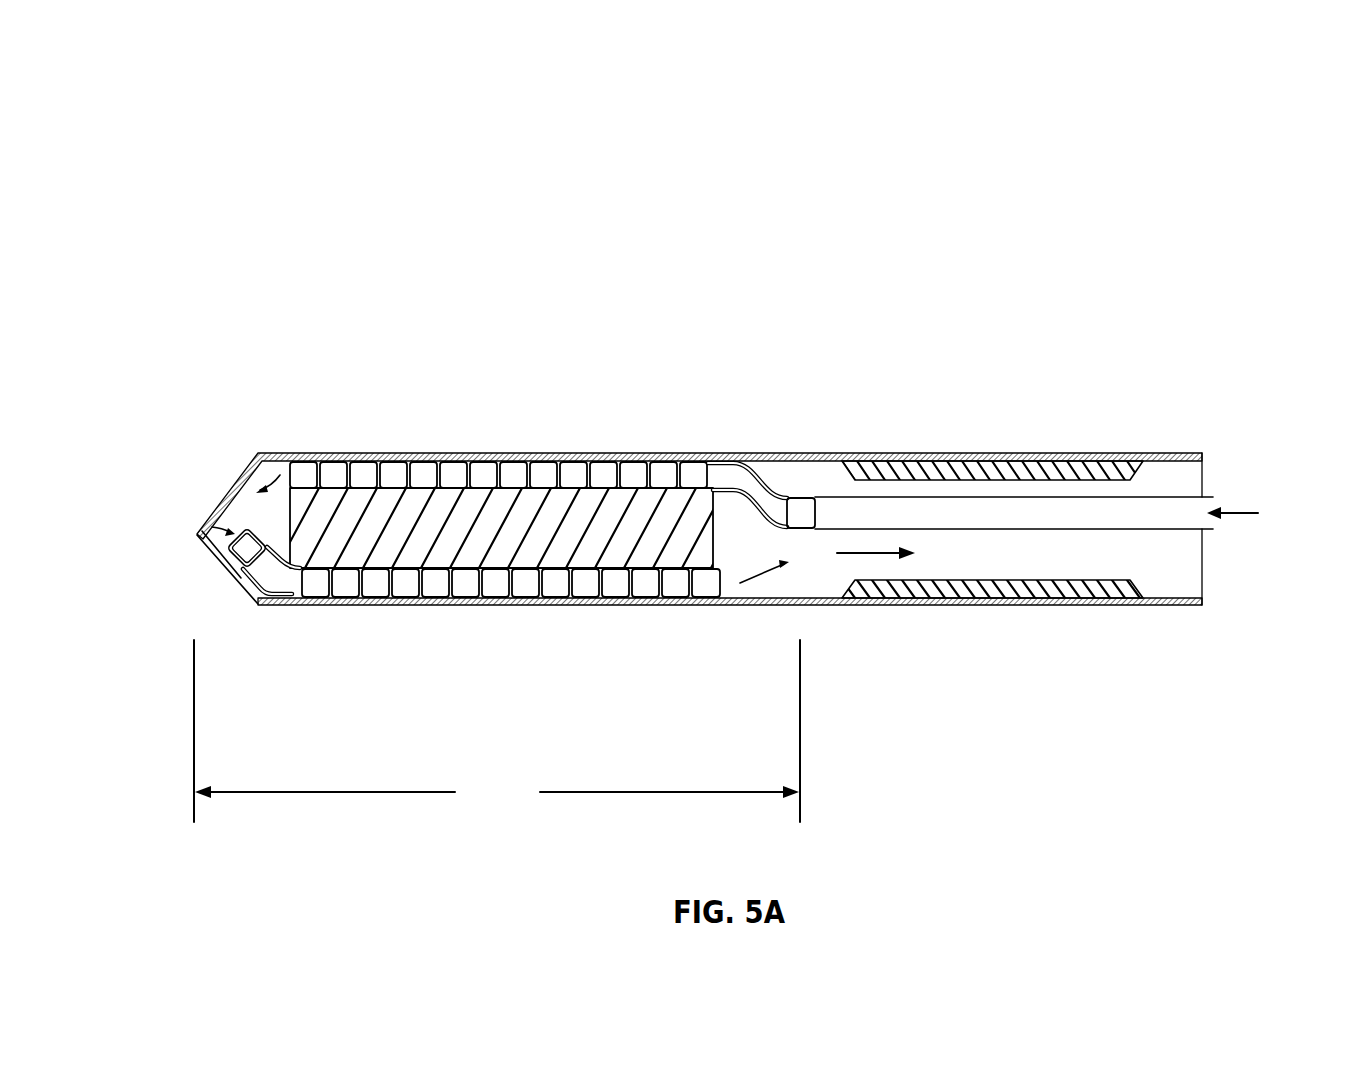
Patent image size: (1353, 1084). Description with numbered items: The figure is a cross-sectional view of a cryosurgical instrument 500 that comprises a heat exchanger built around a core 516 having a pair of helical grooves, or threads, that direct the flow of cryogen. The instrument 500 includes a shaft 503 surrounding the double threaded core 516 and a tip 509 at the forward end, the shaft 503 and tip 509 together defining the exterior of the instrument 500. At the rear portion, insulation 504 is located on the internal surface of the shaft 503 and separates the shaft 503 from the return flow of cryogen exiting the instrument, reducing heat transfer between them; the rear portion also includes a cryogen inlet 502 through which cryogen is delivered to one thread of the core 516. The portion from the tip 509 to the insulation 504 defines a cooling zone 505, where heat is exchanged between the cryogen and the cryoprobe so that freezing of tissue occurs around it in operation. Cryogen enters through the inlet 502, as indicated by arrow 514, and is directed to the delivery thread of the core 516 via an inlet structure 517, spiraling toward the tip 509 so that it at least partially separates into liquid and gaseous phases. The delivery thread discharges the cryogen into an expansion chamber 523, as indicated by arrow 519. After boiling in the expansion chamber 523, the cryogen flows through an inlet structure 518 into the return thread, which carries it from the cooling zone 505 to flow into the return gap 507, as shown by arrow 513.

The cryosurgical instrument 500 is at (455, 205).
The cryogen inlet 502 is at (1180, 508).
The shaft 503 is at (1050, 458).
The insulation 504 is at (955, 468).
The cooling zone 505 is at (497, 731).
The return gap 507 is at (1078, 555).
The tip 509 is at (199, 537).
The arrow 513 is at (761, 583).
The return flow arrow 514 is at (1260, 515).
The core 516 is at (599, 513).
The inlet structure 517 is at (807, 510).
The inlet structure 518 is at (243, 560).
The arrow 519 is at (271, 470).
The expansion chamber 523 is at (235, 510).